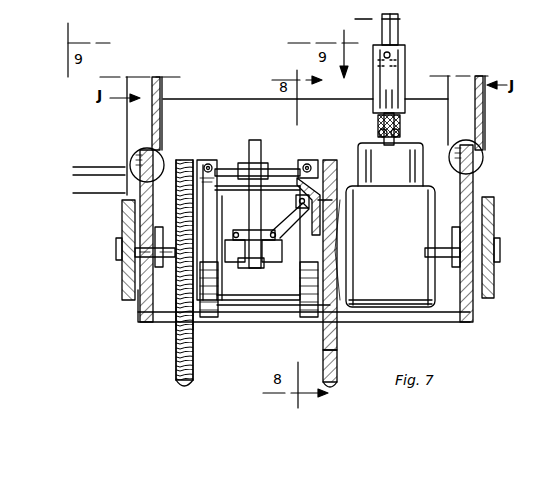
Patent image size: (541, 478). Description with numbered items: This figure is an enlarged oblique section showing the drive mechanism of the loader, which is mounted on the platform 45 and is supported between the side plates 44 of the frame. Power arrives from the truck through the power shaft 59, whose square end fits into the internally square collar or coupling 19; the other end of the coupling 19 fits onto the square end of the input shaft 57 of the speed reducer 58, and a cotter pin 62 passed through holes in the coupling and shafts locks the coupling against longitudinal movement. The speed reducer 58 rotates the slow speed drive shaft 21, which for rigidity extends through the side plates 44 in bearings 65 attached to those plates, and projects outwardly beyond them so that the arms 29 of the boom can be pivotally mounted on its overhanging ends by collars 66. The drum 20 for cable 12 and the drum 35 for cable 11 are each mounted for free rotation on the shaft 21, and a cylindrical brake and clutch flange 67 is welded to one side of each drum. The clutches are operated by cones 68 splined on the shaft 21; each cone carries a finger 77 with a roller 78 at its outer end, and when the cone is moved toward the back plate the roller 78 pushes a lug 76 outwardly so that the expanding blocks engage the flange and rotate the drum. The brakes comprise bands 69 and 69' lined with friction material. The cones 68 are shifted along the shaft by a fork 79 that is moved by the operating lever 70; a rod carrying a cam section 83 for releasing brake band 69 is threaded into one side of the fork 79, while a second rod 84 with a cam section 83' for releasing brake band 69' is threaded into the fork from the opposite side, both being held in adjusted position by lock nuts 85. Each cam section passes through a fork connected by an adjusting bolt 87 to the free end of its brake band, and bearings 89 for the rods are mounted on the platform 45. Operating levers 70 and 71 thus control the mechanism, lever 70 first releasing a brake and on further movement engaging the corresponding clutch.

The cable 11 is at (336, 368).
The cable 12 is at (176, 362).
The collar or coupling 19 is at (393, 80).
The drum 20 is at (175, 327).
The slow speed drive shaft 21 is at (167, 250).
The arms 29 is at (122, 287).
The drum 35 is at (338, 326).
The side plates 44 is at (142, 303).
The platform 45 is at (270, 307).
The input shaft 57 is at (400, 123).
The speed reducer 58 is at (385, 225).
The power shaft 59 is at (400, 24).
The cotter pin 62 is at (390, 53).
The bearings 65 is at (157, 235).
The collars 66 is at (118, 245).
The brake and clutch flange 67 is at (217, 292).
The cones 68 is at (258, 268).
The brake band 69 is at (217, 302).
The brake band 69' is at (302, 302).
The operating lever 70 is at (108, 162).
The operating lever 71 is at (118, 184).
The lug 76 is at (290, 199).
The finger 77 is at (262, 222).
The roller 78 is at (298, 197).
The fork 79 is at (253, 160).
The cam section 83 is at (207, 214).
The cam section 83' is at (408, 160).
The second rod 84 is at (308, 170).
The lock nuts 85 is at (270, 165).
The adjusting bolt 87 is at (197, 162).
The bearings 89 is at (315, 165).